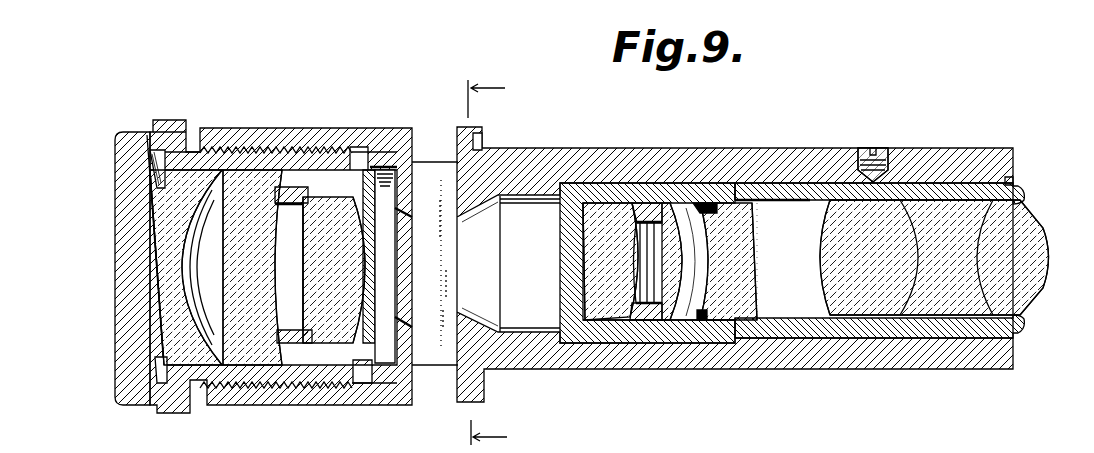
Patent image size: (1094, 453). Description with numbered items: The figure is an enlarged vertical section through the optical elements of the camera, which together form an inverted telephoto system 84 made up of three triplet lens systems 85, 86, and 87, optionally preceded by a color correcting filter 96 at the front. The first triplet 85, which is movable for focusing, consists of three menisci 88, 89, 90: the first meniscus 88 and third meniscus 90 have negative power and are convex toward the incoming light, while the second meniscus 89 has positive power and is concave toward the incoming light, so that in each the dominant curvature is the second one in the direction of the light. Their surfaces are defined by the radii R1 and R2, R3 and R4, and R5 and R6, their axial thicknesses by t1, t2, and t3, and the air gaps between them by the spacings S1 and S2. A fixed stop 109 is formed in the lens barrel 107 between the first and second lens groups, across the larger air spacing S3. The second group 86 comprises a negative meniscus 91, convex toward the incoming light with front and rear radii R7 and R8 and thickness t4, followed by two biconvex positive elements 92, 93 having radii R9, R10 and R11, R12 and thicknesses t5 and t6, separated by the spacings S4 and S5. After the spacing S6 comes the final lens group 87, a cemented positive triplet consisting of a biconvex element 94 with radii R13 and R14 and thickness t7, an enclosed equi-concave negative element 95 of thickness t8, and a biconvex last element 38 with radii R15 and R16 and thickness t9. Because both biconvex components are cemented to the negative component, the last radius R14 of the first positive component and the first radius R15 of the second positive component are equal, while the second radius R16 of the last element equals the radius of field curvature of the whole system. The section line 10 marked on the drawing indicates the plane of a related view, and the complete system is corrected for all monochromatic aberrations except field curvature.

The inverted telephoto system 84 is at (153, 113).
The first triplet lens system 85 is at (160, 422).
The second lens group 86 is at (750, 378).
The final lens group 87 is at (1027, 378).
The first meniscus 88 is at (193, 172).
The second meniscus 89 is at (245, 176).
The third meniscus 90 is at (331, 184).
The negative meniscus 91 is at (601, 204).
The first biconvex lens 92 is at (674, 204).
The second positive biconvex element 93 is at (732, 203).
The biconvex element 94 is at (843, 198).
The equi-concave negative element 95 is at (933, 243).
The color correcting filter 96 is at (148, 178).
The lens barrel 107 is at (483, 128).
The fixed stop 109 is at (502, 196).
The section line 10 is at (474, 262).
The biconvex last element 38 is at (1053, 243).
The first radius of first meniscus R1 is at (145, 233).
The second radius of first meniscus R2 is at (195, 274).
The first radius of second meniscus R3 is at (235, 228).
The second radius of second meniscus R4 is at (280, 305).
The first radius of third meniscus R5 is at (279, 228).
The second radius of third meniscus R6 is at (352, 290).
The front radius of negative meniscus R7 is at (598, 263).
The rear radius of negative meniscus R8 is at (633, 292).
The first radius of first biconvex lens R9 is at (637, 215).
The second radius of first biconvex lens R10 is at (703, 222).
The first radius of second biconvex element R11 is at (737, 287).
The second radius of second biconvex element R12 is at (759, 228).
The front radius of first biconvex lens of final triplet R13 is at (821, 231).
The rear radius of first biconvex lens of final triplet R14 is at (902, 240).
The front radius of rear biconvex lens R15 is at (1019, 228).
The rear radius of rear biconvex lens R16 is at (1056, 275).
The thickness of first meniscus t1 is at (160, 270).
The thickness of second meniscus t2 is at (256, 268).
The thickness of third meniscus t3 is at (317, 186).
The thickness of negative meniscus t4 is at (602, 243).
The thickness of first biconvex lens t5 is at (677, 253).
The thickness of second biconvex element t6 is at (737, 249).
The thickness of first cemented biconvex element t7 is at (862, 257).
The thickness of equi-concave negative element t8 is at (990, 227).
The thickness of last biconvex element t9 is at (1017, 245).
The first air spacing S1 is at (186, 282).
The second air spacing S2 is at (294, 276).
The third air spacing S3 is at (472, 252).
The fourth air spacing S4 is at (648, 260).
The fifth air spacing S5 is at (710, 262).
The sixth air spacing S6 is at (788, 305).